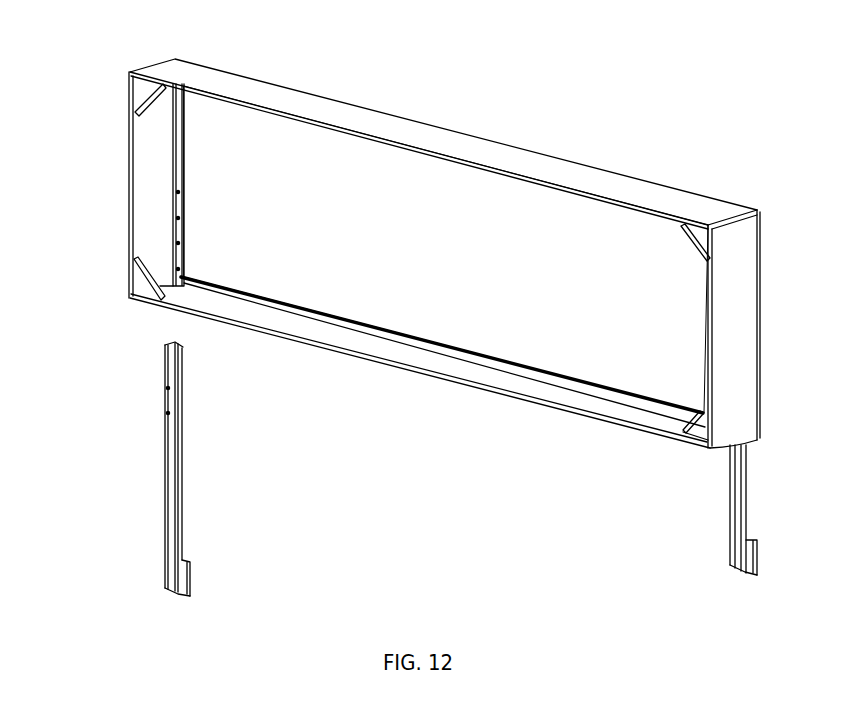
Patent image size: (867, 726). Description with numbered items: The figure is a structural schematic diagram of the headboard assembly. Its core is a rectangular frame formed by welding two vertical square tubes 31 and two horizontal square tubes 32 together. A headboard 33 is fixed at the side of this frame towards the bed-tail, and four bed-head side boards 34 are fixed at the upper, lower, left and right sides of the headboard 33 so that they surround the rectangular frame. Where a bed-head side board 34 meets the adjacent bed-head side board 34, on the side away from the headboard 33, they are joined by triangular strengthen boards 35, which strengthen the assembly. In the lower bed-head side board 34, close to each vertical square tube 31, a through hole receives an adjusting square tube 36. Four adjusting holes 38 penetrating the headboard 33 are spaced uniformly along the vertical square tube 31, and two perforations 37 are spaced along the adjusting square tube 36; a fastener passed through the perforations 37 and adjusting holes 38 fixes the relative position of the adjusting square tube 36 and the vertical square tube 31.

The vertical square tube 31 is at (173, 146).
The horizontal square tube 32 is at (418, 348).
The headboard 33 is at (442, 193).
The bed-head side board 34 is at (377, 120).
The triangular strengthen board 35 is at (702, 228).
The adjusting square tube 36 is at (168, 387).
The perforation 37 is at (168, 505).
The adjusting hole 38 is at (173, 222).